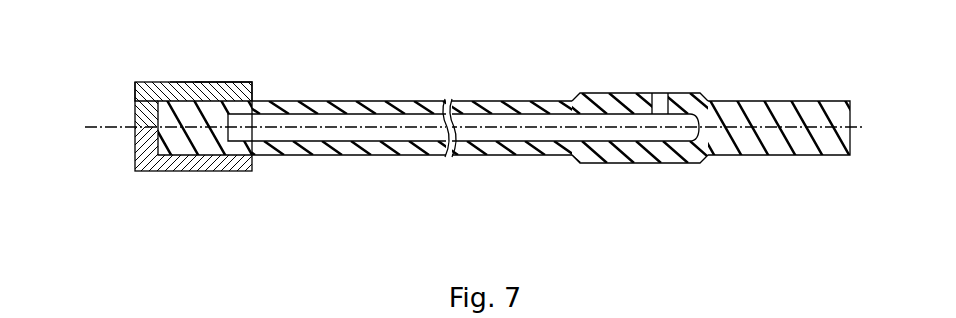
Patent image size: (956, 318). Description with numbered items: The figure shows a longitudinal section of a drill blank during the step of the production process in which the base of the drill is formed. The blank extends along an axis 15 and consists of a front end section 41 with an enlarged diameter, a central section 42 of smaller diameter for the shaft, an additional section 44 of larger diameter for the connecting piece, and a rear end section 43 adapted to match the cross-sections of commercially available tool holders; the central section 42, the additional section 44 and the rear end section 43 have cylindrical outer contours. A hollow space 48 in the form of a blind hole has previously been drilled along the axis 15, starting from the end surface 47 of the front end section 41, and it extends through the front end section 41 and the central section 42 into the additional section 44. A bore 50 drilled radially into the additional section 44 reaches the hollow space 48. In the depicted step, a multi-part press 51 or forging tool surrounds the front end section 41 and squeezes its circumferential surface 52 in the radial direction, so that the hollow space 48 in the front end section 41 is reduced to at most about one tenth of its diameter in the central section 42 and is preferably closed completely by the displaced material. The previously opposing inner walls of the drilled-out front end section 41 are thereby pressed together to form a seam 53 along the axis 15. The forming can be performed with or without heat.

The axis 15 is at (122, 125).
The front end section 41 is at (155, 203).
The central section 42 is at (575, 203).
The rear end section 43 is at (698, 203).
The additional section 44 is at (698, 203).
The end surface 47 is at (135, 112).
The hollow space 48 is at (368, 122).
The bore 50 is at (660, 103).
The multi-part press 51 is at (198, 83).
The circumferential surface 52 is at (183, 85).
The seam 53 is at (135, 82).